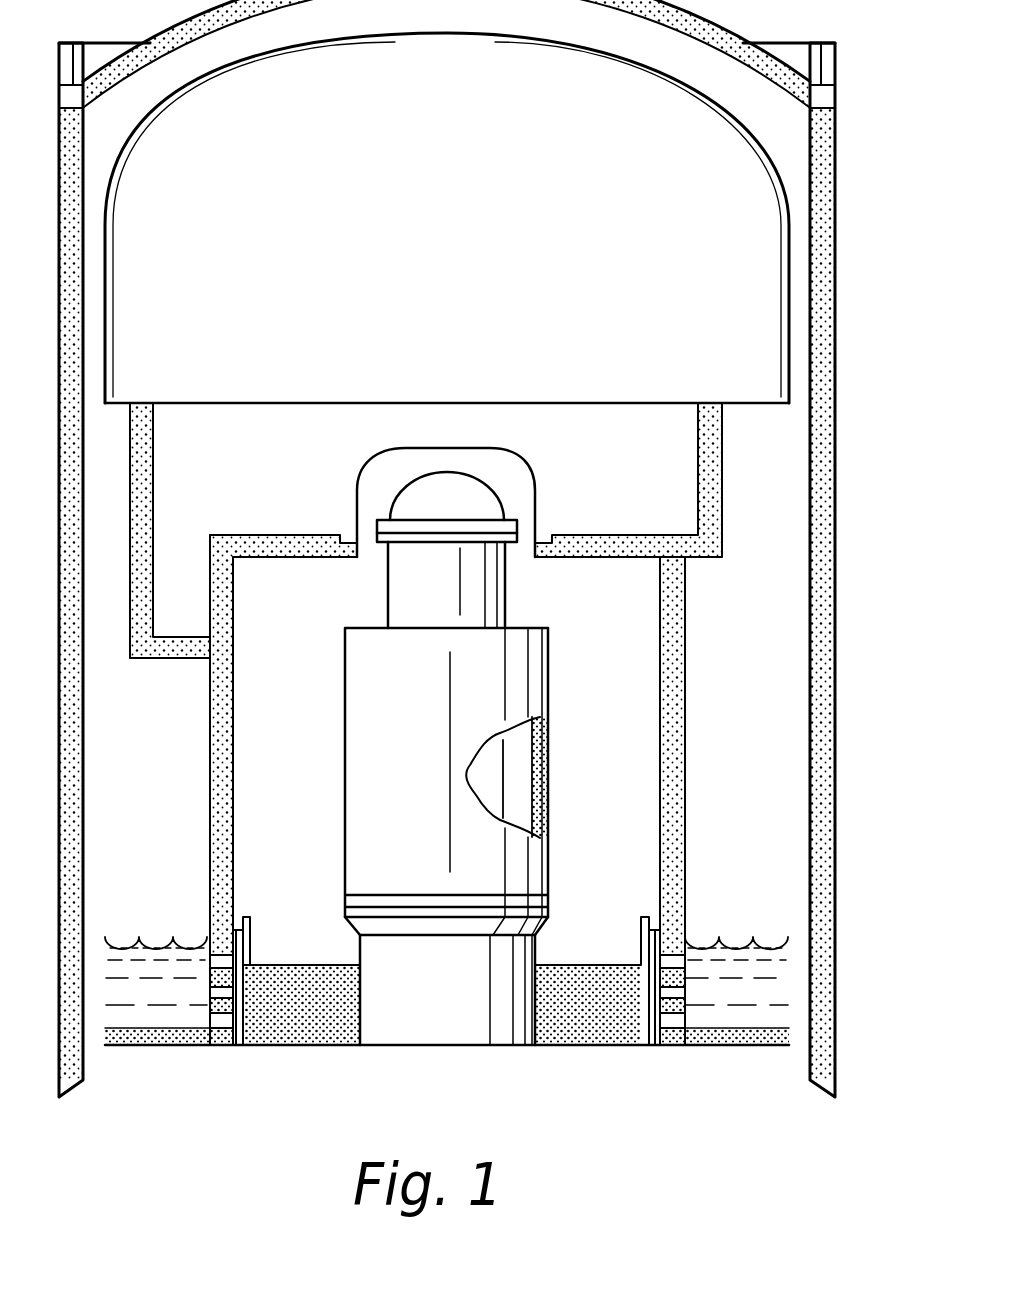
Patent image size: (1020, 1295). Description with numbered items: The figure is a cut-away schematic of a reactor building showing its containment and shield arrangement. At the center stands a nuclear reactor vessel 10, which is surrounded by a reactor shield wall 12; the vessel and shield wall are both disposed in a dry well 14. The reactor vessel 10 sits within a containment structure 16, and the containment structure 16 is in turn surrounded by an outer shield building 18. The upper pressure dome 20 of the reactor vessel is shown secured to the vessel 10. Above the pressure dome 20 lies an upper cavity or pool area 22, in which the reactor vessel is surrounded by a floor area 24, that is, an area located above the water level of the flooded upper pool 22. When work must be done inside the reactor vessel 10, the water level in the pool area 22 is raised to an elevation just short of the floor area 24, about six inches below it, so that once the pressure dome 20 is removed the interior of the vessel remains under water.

The nuclear reactor vessel 10 is at (490, 582).
The reactor shield wall 12 is at (548, 780).
The dry well 14 is at (670, 730).
The containment structure 16 is at (792, 295).
The shield building 18 is at (823, 485).
The upper pressure dome 20 is at (410, 498).
The upper cavity or pool area 22 is at (642, 499).
The floor area 24 is at (755, 402).